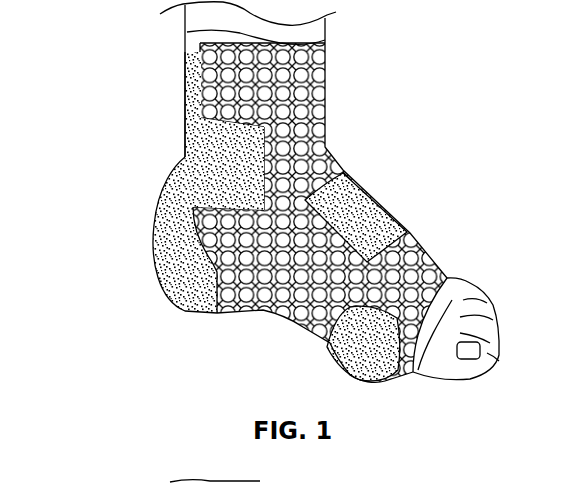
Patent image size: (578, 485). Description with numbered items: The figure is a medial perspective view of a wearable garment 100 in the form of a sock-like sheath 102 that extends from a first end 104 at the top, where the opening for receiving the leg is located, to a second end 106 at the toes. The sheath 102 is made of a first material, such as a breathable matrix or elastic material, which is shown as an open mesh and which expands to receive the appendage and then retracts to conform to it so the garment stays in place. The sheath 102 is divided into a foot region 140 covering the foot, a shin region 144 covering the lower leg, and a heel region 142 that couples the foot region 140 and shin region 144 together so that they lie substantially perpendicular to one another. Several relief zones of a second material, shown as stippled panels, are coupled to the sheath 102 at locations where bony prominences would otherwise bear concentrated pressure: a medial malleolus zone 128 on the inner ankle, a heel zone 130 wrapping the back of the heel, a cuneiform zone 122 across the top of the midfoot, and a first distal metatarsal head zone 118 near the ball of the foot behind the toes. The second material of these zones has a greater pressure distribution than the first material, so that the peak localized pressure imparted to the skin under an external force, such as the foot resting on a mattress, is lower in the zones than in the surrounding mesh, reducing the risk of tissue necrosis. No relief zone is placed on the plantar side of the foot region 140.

The wearable garment 100 is at (132, 103).
The sheath 102 is at (323, 122).
The first end 104 is at (184, 20).
The second end 106 is at (447, 279).
The first distal metatarsal head zone 118 is at (351, 362).
The cuneiform zone 122 is at (367, 193).
The medial malleolus zone 128 is at (183, 150).
The heel zone 130 is at (153, 258).
The foot region 140 is at (386, 291).
The heel region 142 is at (165, 322).
The shin region 144 is at (282, 76).